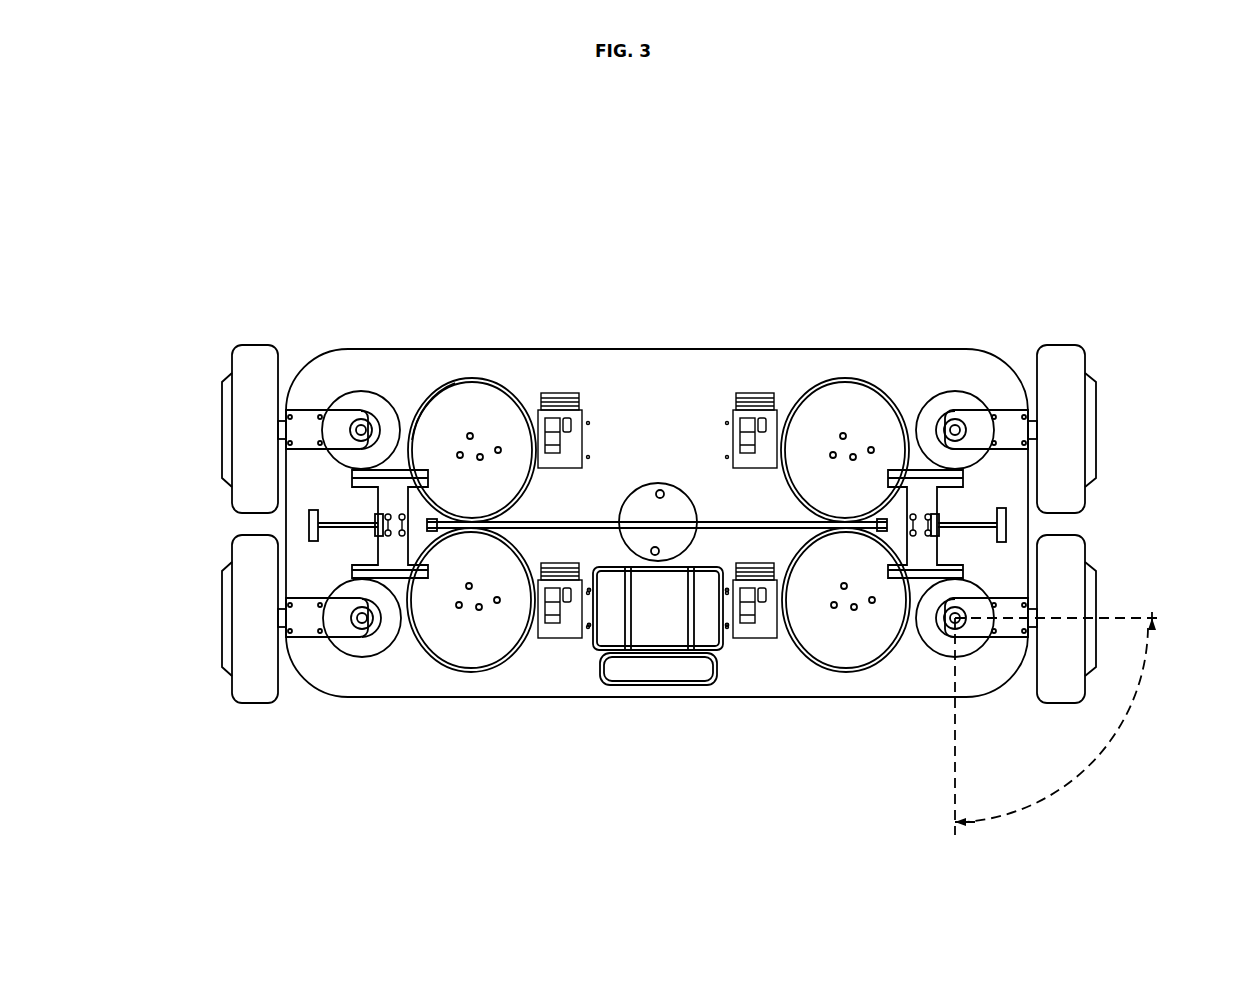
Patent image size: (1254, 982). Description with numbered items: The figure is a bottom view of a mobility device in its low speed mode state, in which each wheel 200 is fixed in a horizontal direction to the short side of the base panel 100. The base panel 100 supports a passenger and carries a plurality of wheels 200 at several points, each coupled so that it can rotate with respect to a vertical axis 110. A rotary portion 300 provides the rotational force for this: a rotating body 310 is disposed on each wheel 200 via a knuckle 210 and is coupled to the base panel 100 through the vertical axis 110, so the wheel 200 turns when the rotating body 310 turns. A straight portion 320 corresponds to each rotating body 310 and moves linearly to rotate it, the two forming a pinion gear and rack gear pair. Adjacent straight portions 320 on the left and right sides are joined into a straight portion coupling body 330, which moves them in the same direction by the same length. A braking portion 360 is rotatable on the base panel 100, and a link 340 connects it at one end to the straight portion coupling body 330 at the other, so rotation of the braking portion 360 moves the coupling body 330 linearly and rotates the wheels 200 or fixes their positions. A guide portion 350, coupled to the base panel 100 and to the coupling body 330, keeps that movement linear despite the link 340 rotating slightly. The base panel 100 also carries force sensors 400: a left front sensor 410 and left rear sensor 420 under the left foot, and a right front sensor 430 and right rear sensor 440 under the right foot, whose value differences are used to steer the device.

The base panel 100 is at (817, 349).
The vertical axis 110 is at (352, 432).
The wheel 200 is at (255, 360).
The knuckle 210 is at (285, 410).
The rotary portion 300 is at (341, 306).
The rotating body 310 is at (362, 400).
The straight portion 320 is at (455, 383).
The straight portion coupling body 330 is at (401, 548).
The link 340 is at (602, 518).
The guide portion 350 is at (317, 638).
The braking portion 360 is at (668, 484).
The force sensor 400 is at (653, 722).
The left front sensor 410 is at (462, 669).
The left rear sensor 420 is at (505, 377).
The right front sensor 430 is at (823, 669).
The right rear sensor 440 is at (867, 378).